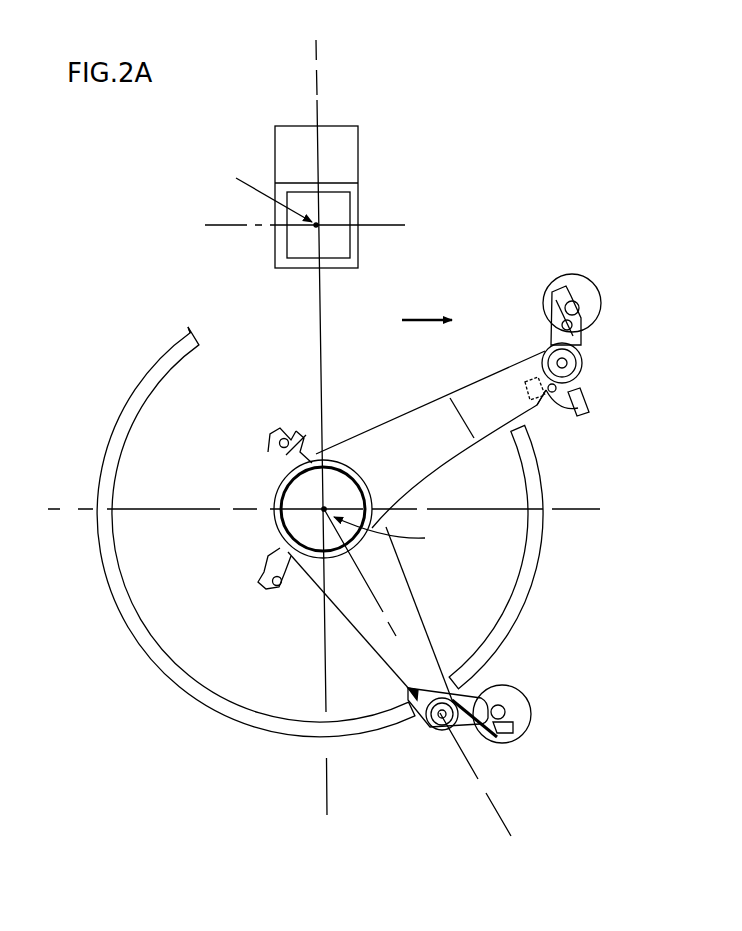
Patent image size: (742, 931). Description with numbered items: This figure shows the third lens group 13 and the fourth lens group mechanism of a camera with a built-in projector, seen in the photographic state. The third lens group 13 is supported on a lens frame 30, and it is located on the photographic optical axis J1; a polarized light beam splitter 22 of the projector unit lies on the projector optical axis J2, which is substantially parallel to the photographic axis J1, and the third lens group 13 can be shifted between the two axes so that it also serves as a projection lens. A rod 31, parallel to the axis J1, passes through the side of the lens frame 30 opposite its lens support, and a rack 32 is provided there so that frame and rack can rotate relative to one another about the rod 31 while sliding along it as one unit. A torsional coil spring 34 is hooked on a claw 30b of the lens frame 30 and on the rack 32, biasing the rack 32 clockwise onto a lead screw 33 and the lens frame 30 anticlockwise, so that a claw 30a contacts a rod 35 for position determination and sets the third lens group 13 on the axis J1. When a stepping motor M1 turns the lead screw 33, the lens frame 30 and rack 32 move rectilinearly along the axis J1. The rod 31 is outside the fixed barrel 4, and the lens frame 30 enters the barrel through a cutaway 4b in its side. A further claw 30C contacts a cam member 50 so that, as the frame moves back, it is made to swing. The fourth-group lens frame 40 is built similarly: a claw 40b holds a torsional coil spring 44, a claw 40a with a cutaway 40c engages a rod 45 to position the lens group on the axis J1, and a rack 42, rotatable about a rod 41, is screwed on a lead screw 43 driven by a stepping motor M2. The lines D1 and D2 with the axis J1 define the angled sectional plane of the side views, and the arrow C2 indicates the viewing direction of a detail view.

The fixed barrel 4 is at (133, 398).
The cutaway 4b is at (192, 333).
The third lens group 13 is at (290, 497).
The polarized light beam splitter 22 is at (340, 203).
The lens frame 30 is at (404, 424).
The claw 30a is at (272, 550).
The claw 30b is at (552, 392).
The claw 30C is at (582, 413).
The rod 31 is at (565, 364).
The rack 32 is at (557, 297).
The lead screw 33 is at (577, 298).
The torsional coil spring 34 is at (562, 322).
The rod for position determination 35 is at (277, 586).
The lens frame 40 is at (405, 600).
The claw 40a is at (294, 449).
The claw 40b is at (415, 690).
The cutaway 40c is at (277, 437).
The rod 41 is at (430, 727).
The rack 42 is at (508, 730).
The lead screw 43 is at (508, 710).
The torsional coil spring 44 is at (480, 732).
The rod 45 is at (283, 437).
The cam member 50 is at (589, 395).
The stepping motor M1 is at (593, 300).
The stepping motor M2 is at (497, 690).
The photographic optical axis J1 is at (384, 532).
The projector optical axis J2 is at (264, 191).
The sectional plane reference line D1 is at (317, 413).
The sectional plane reference line D2 is at (429, 685).
The viewing direction arrow C2 is at (427, 304).